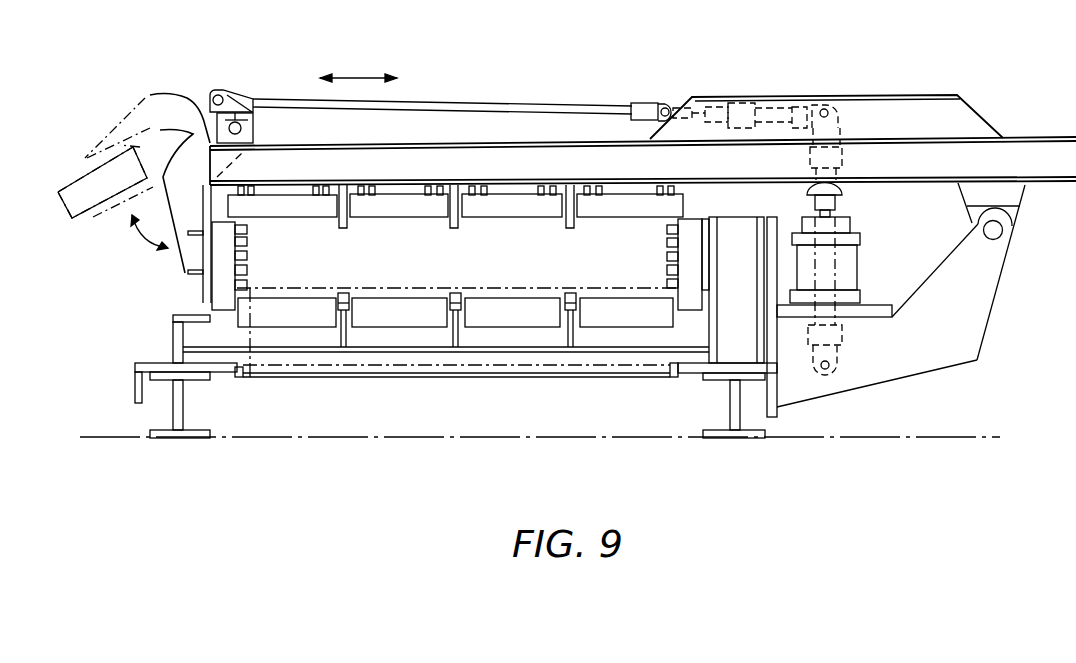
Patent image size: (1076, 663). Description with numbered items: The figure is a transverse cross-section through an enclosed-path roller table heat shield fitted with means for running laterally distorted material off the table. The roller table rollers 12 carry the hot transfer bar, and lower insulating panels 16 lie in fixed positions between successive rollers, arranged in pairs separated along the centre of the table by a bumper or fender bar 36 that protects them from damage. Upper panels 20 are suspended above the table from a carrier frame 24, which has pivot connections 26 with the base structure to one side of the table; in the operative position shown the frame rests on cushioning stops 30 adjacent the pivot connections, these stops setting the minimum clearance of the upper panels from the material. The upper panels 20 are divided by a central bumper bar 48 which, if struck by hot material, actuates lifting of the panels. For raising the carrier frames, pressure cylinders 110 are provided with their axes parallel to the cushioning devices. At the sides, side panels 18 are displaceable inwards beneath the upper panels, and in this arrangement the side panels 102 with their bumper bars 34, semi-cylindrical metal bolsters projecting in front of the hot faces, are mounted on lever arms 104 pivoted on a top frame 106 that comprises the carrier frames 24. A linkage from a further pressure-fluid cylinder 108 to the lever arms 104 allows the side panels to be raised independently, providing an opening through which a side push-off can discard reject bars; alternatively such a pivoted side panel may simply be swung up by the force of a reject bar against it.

The roller table rollers 12 is at (290, 358).
The lower insulating panels 16 is at (647, 313).
The side panels 18 is at (690, 245).
The upper panels 20 is at (518, 207).
The carrier frame 24 is at (527, 143).
The pivot connections 26 is at (1000, 235).
The cushioning stops 30 is at (850, 259).
The bumper bars 34 is at (247, 278).
The bumper or fender bar 36 is at (570, 293).
The central bumper bar 48 is at (457, 230).
The side panels 102 is at (223, 275).
The lever arms 104 is at (192, 170).
The top frame 106 is at (897, 95).
The pressure-fluid cylinder 108 is at (772, 108).
The pressure cylinders 110 is at (836, 277).